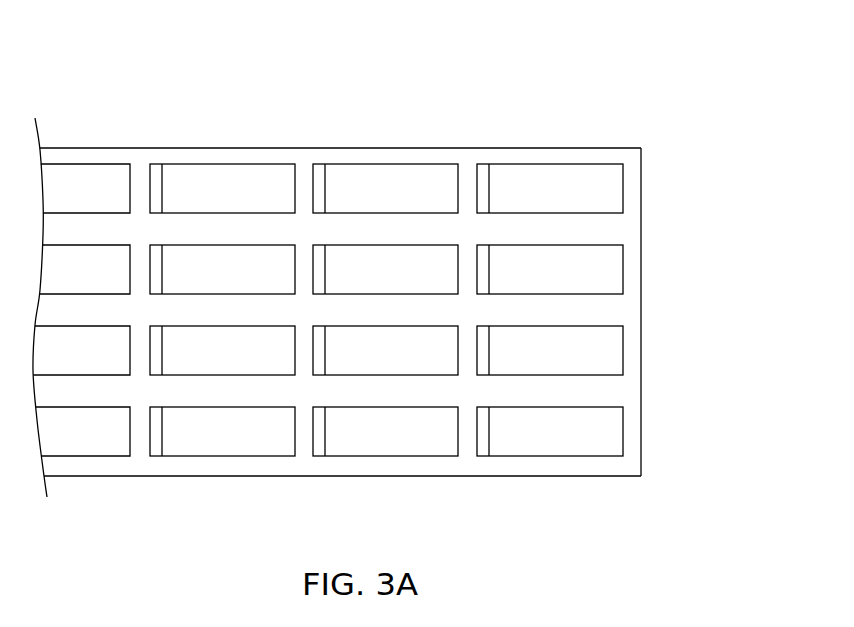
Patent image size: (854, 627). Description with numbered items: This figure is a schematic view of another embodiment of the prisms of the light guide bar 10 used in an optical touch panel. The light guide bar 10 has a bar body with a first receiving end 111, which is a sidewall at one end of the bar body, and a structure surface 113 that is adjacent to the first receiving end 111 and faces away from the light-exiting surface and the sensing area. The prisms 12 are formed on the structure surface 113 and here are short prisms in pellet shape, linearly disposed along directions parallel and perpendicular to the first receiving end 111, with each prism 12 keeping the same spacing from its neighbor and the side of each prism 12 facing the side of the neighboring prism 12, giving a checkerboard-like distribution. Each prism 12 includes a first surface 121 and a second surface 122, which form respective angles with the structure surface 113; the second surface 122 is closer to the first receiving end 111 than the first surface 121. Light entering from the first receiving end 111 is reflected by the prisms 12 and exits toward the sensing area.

The light guide bar 10 is at (385, 320).
The first receiving end 111 is at (642, 443).
The structure surface 113 is at (140, 173).
The prism 12 is at (386, 241).
The first surface 121 is at (325, 269).
The second surface 122 is at (592, 172).